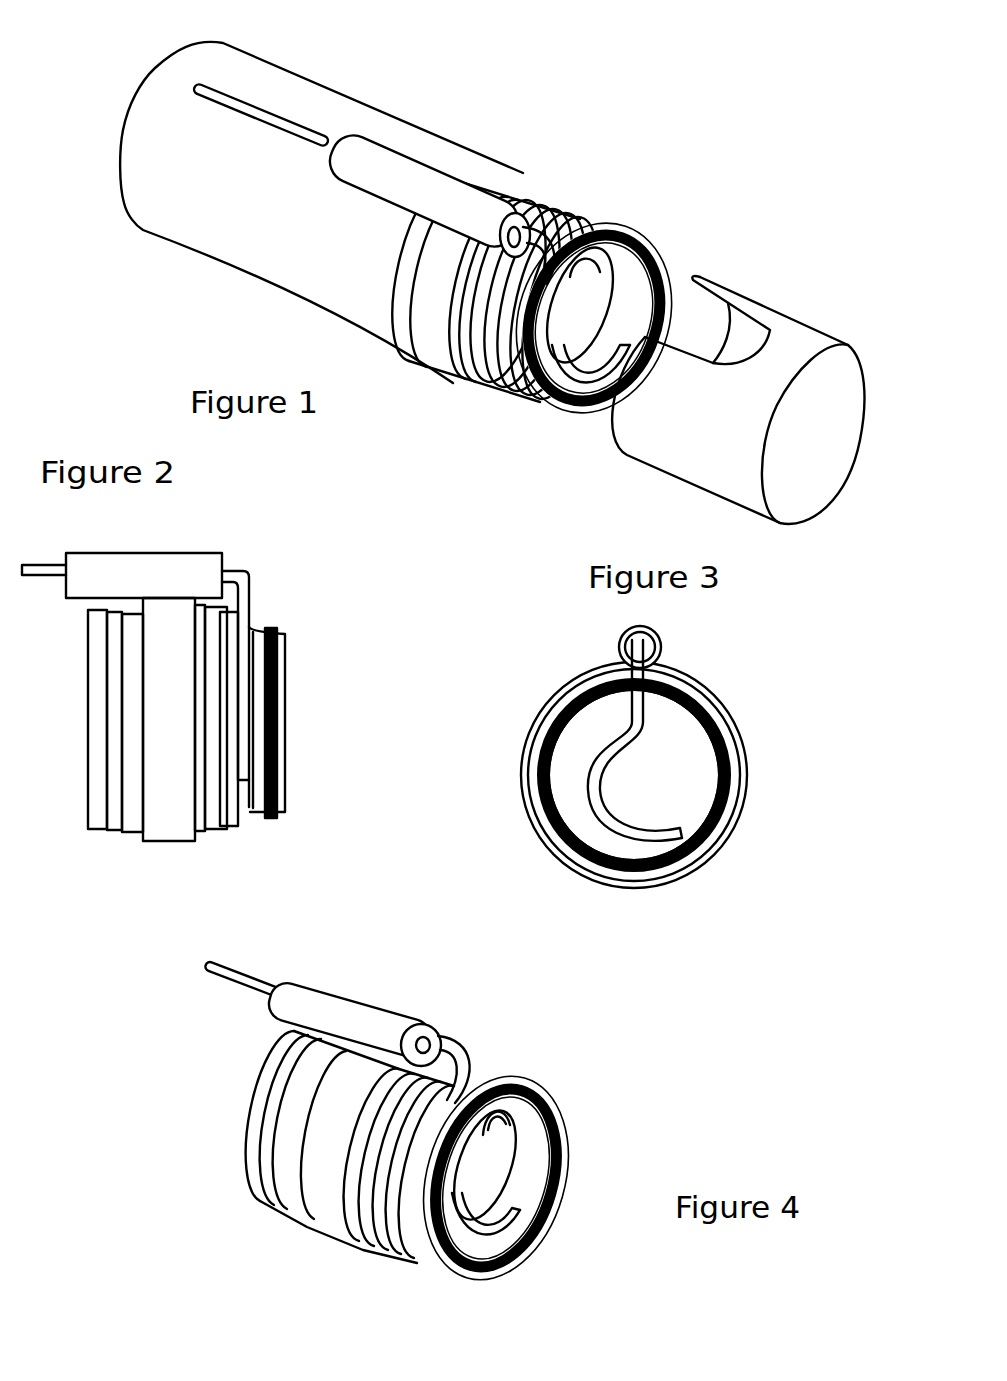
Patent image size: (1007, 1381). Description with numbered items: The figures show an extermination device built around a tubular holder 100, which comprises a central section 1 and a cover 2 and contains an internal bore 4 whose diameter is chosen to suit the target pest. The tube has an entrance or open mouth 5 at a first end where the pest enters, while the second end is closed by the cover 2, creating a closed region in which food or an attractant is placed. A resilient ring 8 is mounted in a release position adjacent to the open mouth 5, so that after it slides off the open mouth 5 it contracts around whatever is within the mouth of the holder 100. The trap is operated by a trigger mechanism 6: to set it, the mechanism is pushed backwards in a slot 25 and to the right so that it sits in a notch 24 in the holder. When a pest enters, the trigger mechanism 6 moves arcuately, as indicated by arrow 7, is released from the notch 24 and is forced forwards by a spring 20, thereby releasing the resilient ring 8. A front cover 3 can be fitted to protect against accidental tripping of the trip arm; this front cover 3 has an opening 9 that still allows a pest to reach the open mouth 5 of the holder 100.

In FIG. 1, the central section 1 is at (615, 176).
In FIG. 2, the central section 1 is at (219, 771).
In FIG. 4, the central section 1 is at (497, 1003).
In FIG. 1, the cover 2 is at (397, 213).
In FIG. 1, the front cover 3 is at (746, 387).
In FIG. 3, the internal bore 4 is at (717, 758).
In FIG. 4, the internal bore 4 is at (525, 1192).
In FIG. 2, the open mouth 5 is at (287, 673).
In FIG. 2, the trigger mechanism 6 is at (250, 593).
In FIG. 3, the trigger mechanism 6 is at (607, 798).
In FIG. 3, the arrow 7 is at (582, 826).
In FIG. 1, the resilient ring 8 is at (537, 403).
In FIG. 2, the resilient ring 8 is at (265, 818).
In FIG. 3, the resilient ring 8 is at (538, 785).
In FIG. 4, the resilient ring 8 is at (467, 1280).
In FIG. 1, the opening 9 is at (832, 486).
In FIG. 4, the spring 20 is at (367, 1000).
In FIG. 4, the notch 24 is at (507, 1068).
In FIG. 4, the slot 25 is at (496, 1112).
In FIG. 1, the holder 100 is at (492, 114).